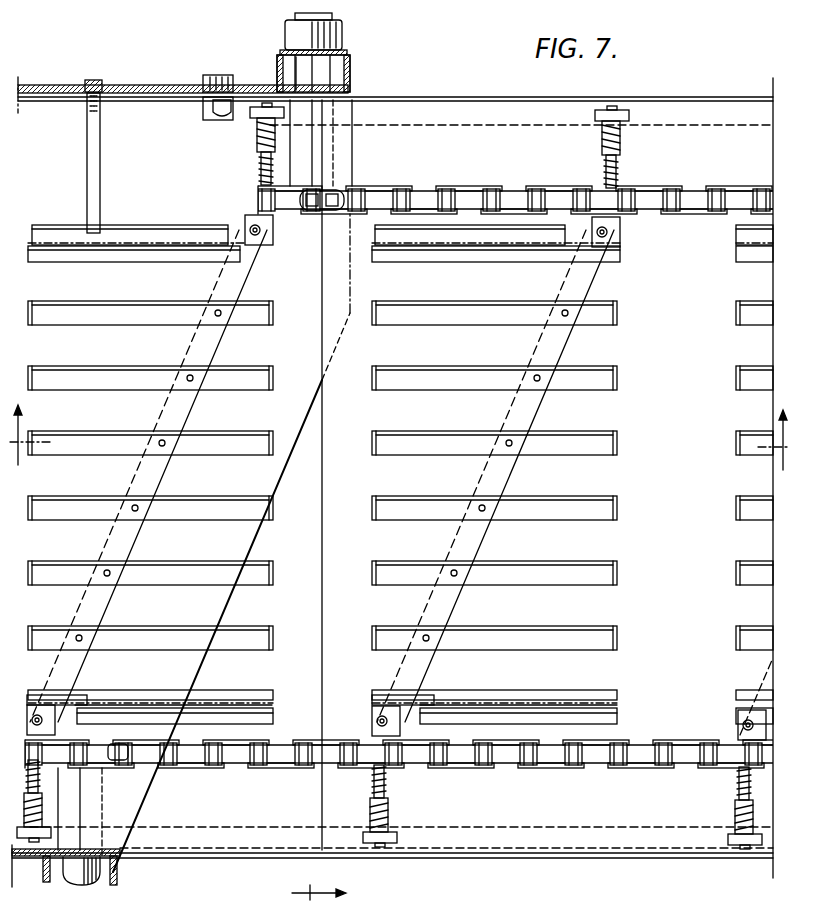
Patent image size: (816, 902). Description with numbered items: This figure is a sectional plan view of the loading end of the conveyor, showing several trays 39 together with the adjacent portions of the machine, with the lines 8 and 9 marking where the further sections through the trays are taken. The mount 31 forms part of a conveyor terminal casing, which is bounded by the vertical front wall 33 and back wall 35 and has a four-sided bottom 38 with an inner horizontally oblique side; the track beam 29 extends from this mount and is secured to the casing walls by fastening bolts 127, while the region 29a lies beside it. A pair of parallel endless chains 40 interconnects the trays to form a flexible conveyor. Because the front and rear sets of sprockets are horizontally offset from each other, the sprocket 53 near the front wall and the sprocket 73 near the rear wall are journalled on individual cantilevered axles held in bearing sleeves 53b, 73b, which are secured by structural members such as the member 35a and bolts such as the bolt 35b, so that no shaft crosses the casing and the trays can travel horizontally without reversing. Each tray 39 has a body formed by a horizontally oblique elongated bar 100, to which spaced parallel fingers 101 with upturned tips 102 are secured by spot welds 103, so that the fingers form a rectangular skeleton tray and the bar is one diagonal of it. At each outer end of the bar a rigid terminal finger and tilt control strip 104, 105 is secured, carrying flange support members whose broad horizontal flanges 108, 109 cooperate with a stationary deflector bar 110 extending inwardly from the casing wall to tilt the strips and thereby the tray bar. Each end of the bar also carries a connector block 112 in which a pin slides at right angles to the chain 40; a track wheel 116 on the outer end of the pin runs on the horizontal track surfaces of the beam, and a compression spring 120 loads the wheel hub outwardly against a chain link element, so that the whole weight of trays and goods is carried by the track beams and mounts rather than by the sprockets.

The section line 8— 8 is at (400, 448).
The section line 9— 9 is at (308, 892).
The track beam 29 is at (318, 341).
The frame side wall 29a is at (697, 442).
The mount 31 is at (307, 550).
The front wall 33 is at (30, 858).
The back wall 35 is at (85, 86).
The structural member 35a is at (350, 72).
The bolt 35b is at (343, 40).
The bottom 38 is at (245, 607).
The conveyor tray 39 is at (400, 398).
The endless chain 40 is at (401, 183).
The sprocket 53 is at (118, 755).
The bearing sleeve 53b is at (118, 869).
The sprocket 73 is at (318, 208).
The bearing sleeve 73b is at (294, 80).
The oblique bar 100 is at (166, 466).
The finger 101 is at (72, 362).
The upturned tip 102 is at (38, 512).
The spot weld 103 is at (84, 634).
The terminal finger and tilt control strip 104 is at (217, 698).
The terminal finger and tilt control strip 105 is at (145, 255).
The flange 108 is at (262, 716).
The flange 109 is at (62, 232).
The deflector bar 110 is at (87, 147).
The connector block 112 is at (246, 228).
The track wheel 116 is at (250, 112).
The compression spring 120 is at (258, 160).
The fastening bolt 127 is at (210, 78).